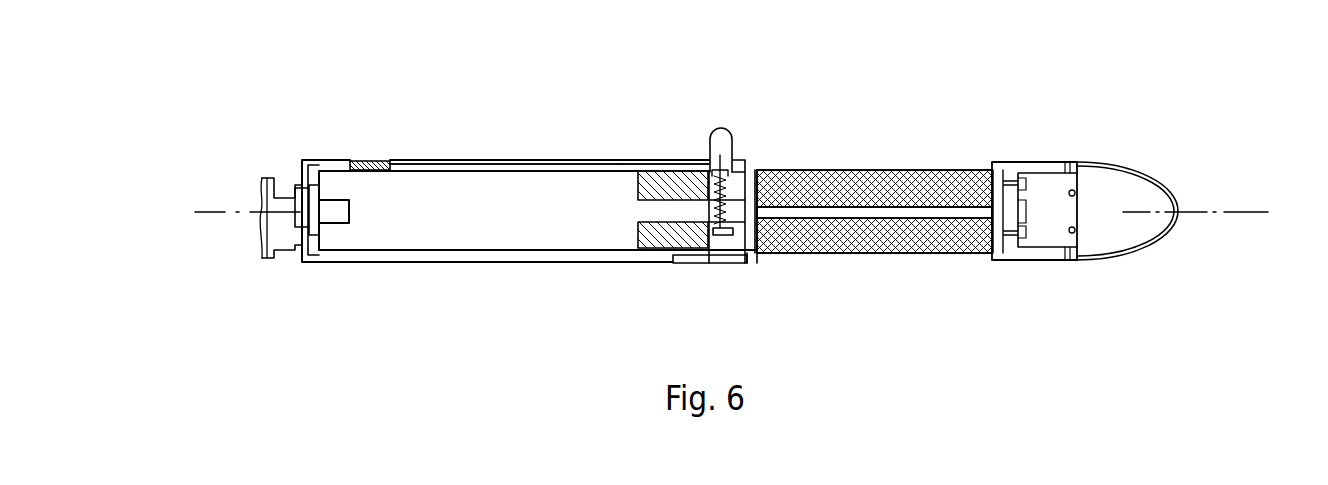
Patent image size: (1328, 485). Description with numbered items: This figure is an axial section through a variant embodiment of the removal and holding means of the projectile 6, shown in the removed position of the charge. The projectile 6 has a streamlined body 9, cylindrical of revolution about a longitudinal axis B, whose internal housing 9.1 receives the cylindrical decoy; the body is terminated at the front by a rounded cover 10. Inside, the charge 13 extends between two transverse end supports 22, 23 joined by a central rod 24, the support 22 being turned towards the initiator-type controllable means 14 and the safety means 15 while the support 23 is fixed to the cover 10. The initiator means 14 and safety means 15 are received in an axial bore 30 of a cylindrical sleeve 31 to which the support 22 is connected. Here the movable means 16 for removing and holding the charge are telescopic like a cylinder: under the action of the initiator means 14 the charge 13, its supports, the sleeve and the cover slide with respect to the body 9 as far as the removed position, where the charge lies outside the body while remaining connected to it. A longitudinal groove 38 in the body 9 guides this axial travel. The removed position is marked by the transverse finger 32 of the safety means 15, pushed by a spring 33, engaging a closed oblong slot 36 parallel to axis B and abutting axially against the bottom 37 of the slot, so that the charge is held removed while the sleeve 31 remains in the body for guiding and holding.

The projectile 6 is at (479, 144).
The streamlined body 9 is at (452, 263).
The internal housing 9.1 is at (469, 220).
The rounded cover 10 is at (1167, 242).
The charge 13 is at (934, 188).
The initiator-type controllable means 14 is at (347, 226).
The safety means 15 is at (730, 128).
The movable means for removing and holding the charge 16 is at (758, 254).
The transverse end support 22 is at (752, 229).
The transverse end support 23 is at (999, 250).
The central rod 24 is at (878, 213).
The axial bore 30 is at (638, 170).
The cylindrical sleeve 31 is at (668, 237).
The transverse finger 32 is at (735, 143).
The spring 33 is at (710, 236).
The closed oblong slot 36 is at (700, 160).
The bottom of the slot 37 is at (735, 153).
The longitudinal groove 38 is at (552, 163).
The longitudinal axis B is at (1248, 212).